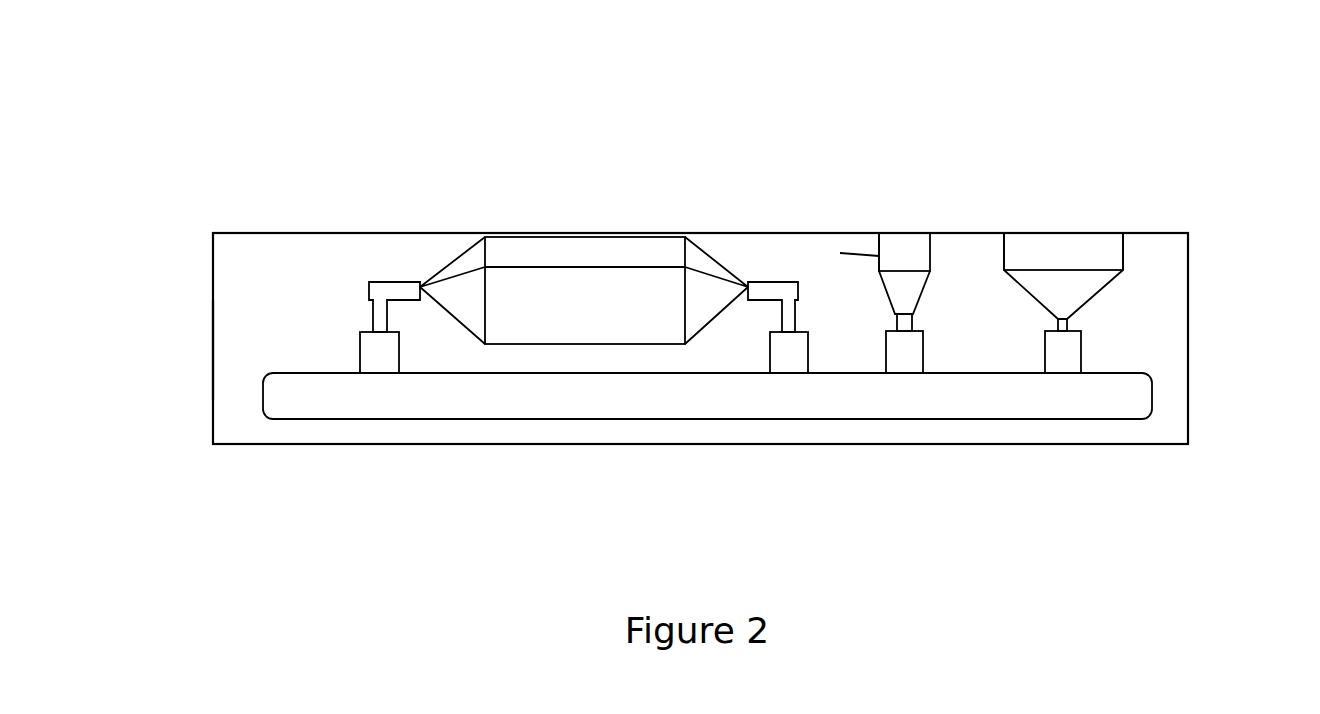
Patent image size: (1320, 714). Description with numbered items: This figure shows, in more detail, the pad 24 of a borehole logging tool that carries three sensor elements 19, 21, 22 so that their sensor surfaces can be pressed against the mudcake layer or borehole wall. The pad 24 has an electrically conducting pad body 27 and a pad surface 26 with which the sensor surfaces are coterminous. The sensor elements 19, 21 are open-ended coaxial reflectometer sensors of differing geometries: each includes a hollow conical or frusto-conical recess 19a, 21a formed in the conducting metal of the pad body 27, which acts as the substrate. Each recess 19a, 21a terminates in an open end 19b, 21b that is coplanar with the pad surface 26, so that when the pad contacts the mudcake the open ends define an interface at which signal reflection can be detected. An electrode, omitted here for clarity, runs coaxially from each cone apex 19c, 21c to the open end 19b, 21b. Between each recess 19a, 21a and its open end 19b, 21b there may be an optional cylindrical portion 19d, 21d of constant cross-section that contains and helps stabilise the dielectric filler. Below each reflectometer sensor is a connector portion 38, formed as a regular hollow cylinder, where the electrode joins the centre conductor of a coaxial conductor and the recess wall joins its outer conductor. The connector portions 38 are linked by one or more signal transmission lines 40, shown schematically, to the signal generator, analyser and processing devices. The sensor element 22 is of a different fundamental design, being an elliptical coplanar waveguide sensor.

The sensor element 19 is at (1147, 202).
The conical recess 19a is at (1105, 290).
The open end 19b is at (1004, 248).
The cone apex 19c is at (1073, 321).
The cylindrical portion 19d is at (1123, 258).
The sensor element 21 is at (907, 276).
The conical recess 21a is at (924, 292).
The open end 21b is at (879, 242).
The cone apex 21c is at (917, 307).
The cylindrical portion 21d is at (840, 253).
The sensor element 22 is at (568, 287).
The pad 24 is at (272, 272).
The pad surface 26 is at (830, 233).
The pad body 27 is at (262, 335).
The connector portion 38 is at (377, 360).
The signal transmission line 40 is at (482, 403).